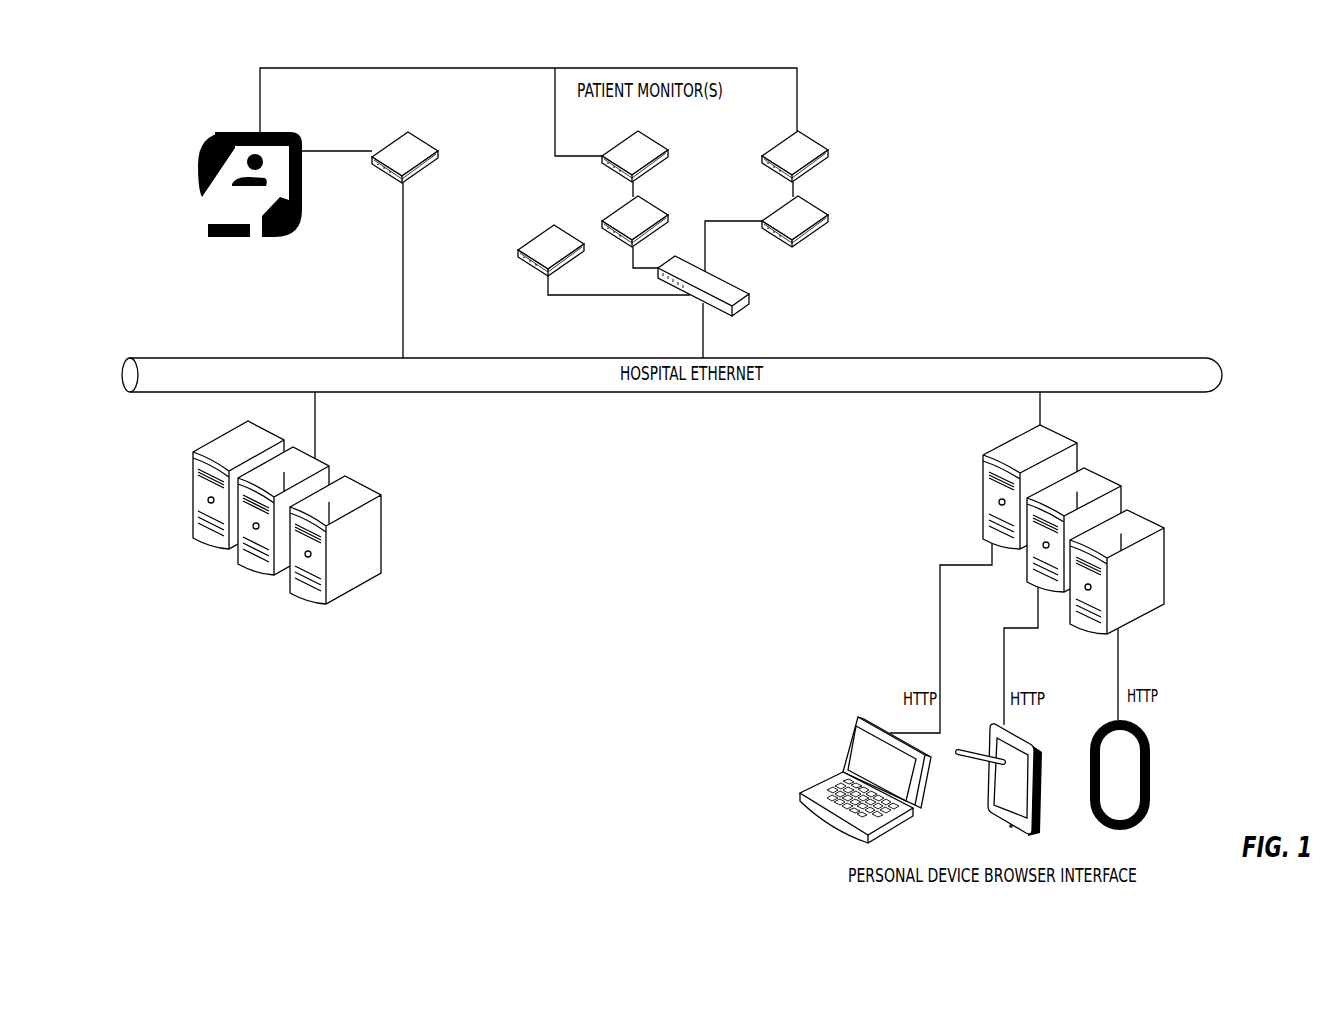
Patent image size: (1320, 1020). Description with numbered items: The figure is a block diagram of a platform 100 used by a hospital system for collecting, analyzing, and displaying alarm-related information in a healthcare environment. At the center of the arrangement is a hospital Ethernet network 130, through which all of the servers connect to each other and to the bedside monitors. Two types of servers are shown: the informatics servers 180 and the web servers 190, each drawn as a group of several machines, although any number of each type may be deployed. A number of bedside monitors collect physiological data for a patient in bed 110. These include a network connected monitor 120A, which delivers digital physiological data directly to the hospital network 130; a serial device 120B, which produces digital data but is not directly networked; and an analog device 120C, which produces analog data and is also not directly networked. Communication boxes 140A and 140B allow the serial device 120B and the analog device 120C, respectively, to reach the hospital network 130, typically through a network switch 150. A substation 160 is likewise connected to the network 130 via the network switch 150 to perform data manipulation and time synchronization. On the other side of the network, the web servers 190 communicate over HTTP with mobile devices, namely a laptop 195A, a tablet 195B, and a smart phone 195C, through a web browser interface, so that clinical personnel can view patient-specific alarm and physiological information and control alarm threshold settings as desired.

The platform 100 is at (940, 96).
The patient in bed 110 is at (250, 237).
The network connected monitor 120A is at (438, 151).
The serial device 120B is at (652, 137).
The analog device 120C is at (826, 153).
The hospital Ethernet network 130 is at (1222, 375).
The communication box 140A is at (661, 204).
The communication box 140B is at (827, 214).
The network switch 150 is at (750, 297).
The substation 160 is at (533, 240).
The informatics server 180 is at (248, 570).
The web server 190 is at (1148, 520).
The laptop 195A is at (820, 823).
The tablet 195B is at (1040, 810).
The smart phone 195C is at (1148, 810).